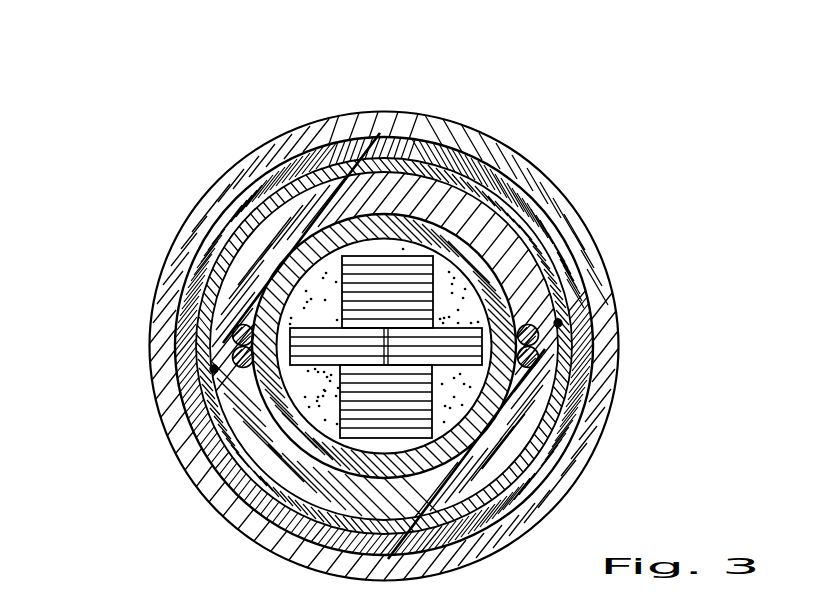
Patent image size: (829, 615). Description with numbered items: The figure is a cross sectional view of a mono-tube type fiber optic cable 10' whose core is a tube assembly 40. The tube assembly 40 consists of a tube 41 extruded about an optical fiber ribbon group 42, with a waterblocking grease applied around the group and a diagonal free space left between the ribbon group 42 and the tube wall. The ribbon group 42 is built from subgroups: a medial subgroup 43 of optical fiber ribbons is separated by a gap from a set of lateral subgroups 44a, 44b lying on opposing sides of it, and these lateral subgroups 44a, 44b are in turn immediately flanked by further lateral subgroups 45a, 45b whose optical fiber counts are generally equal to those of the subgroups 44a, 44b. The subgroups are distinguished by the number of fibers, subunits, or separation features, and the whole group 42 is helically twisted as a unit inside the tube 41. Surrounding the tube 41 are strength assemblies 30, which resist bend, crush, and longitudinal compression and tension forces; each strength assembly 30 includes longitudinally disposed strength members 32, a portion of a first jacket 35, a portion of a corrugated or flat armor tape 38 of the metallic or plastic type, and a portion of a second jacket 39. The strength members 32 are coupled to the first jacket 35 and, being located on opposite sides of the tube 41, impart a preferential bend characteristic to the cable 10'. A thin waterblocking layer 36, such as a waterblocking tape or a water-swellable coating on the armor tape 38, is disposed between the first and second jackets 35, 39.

The fiber optic cable 10' is at (417, 84).
The strength assembly 30 is at (212, 343).
The strength member 32 is at (215, 380).
The first jacket 35 is at (297, 210).
The waterblocking layer 36 is at (220, 253).
The armor tape 38 is at (253, 185).
The second jacket 39 is at (207, 213).
The tube assembly 40 is at (406, 248).
The tube 41 is at (530, 205).
The optical fiber ribbon group 42 is at (459, 270).
The medial subgroup 43 is at (483, 348).
The lateral subgroup 44a is at (435, 310).
The lateral subgroup 44b is at (432, 386).
The lateral subgroup 45a is at (435, 285).
The lateral subgroup 45b is at (450, 437).